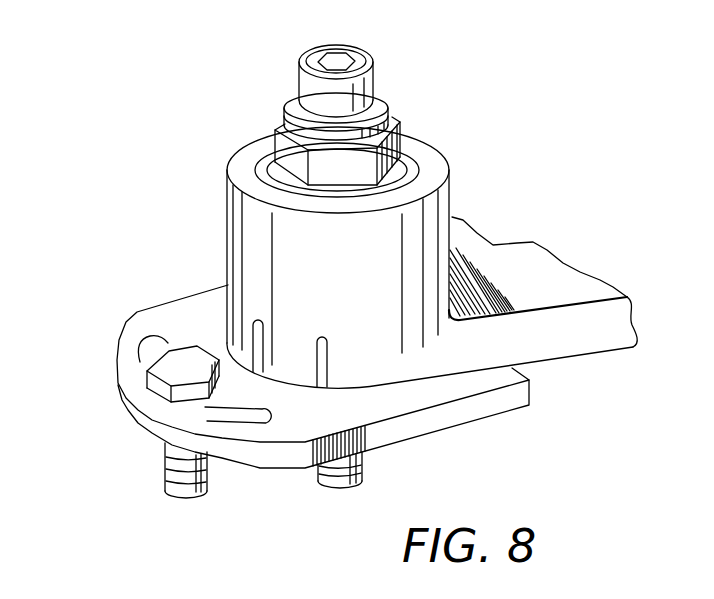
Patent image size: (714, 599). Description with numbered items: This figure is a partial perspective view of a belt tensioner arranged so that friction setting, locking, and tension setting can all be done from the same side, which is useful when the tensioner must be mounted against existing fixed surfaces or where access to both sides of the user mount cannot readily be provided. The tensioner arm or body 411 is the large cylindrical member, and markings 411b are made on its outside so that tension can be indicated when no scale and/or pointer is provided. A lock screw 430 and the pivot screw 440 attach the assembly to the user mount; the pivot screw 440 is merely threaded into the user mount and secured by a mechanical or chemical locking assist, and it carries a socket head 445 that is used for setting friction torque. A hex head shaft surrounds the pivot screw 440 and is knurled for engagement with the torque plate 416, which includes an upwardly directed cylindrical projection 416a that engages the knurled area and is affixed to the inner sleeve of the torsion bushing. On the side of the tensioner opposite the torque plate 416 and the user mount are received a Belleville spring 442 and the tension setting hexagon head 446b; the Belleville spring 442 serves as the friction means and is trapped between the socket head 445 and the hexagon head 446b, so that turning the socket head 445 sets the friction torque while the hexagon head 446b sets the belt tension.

The tensioner arm or body 411 is at (572, 345).
The markings 411b is at (252, 340).
The torque plate 416 is at (477, 410).
The cylindrical projection 416a is at (222, 408).
The lock screw 430 is at (167, 362).
The pivot screw 440 is at (332, 482).
The Belleville spring 442 is at (381, 108).
The socket head 445 is at (357, 52).
The tension setting hexagon head 446b is at (402, 150).